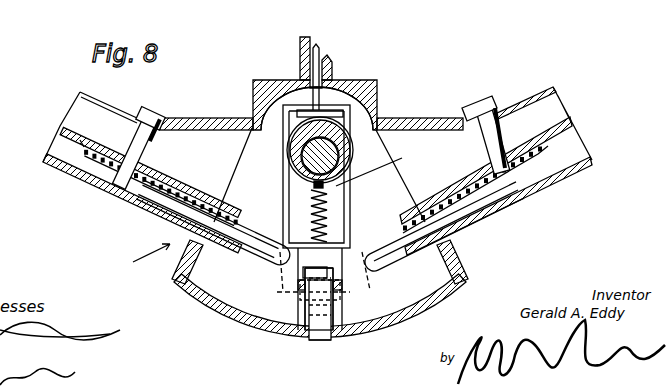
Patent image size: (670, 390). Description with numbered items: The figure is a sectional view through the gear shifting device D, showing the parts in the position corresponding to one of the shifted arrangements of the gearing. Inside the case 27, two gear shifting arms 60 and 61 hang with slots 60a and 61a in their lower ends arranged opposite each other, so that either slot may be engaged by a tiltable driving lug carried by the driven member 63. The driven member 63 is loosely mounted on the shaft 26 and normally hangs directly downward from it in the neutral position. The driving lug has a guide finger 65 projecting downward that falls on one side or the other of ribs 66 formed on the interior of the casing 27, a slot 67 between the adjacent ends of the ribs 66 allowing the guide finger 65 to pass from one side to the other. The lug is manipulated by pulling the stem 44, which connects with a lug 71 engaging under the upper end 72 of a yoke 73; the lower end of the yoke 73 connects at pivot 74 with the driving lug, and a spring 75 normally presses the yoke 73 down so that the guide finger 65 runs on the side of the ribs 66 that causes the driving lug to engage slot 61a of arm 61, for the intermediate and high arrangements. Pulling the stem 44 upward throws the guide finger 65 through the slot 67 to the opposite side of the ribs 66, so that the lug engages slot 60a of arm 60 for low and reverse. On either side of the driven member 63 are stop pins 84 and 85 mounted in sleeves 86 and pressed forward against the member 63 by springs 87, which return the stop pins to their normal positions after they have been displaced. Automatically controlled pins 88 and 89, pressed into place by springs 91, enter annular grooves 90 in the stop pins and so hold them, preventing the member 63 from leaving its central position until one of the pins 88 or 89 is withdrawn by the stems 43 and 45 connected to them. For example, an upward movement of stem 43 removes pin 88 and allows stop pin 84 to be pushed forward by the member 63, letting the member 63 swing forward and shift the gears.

The shaft 26 is at (330, 156).
The case 27 is at (182, 293).
The stem 43 is at (473, 102).
The stem 44 is at (317, 80).
The stem 45 is at (157, 108).
The gear shifting arm 60 is at (322, 266).
The slot 60a is at (305, 272).
The gear shifting arm 61 is at (340, 303).
The slot 61a is at (310, 303).
The driven member 63 is at (430, 330).
The guide finger 65 is at (332, 334).
The ribs 66 is at (243, 313).
The slot 67 is at (320, 340).
The lug 71 is at (302, 118).
The upper end of yoke 72 is at (352, 118).
The yoke 73 is at (292, 192).
The pivot 74 is at (303, 290).
The spring 75 is at (324, 186).
The stop pin 84 is at (390, 268).
The stop pin 85 is at (250, 243).
The sleeves 86 is at (160, 222).
The springs 87 is at (190, 192).
The automatically controlled pin 88 is at (486, 138).
The automatically controlled pin 89 is at (152, 140).
The annular grooves 90 is at (112, 190).
The springs 91 is at (140, 114).
The gear shifting device D is at (143, 260).